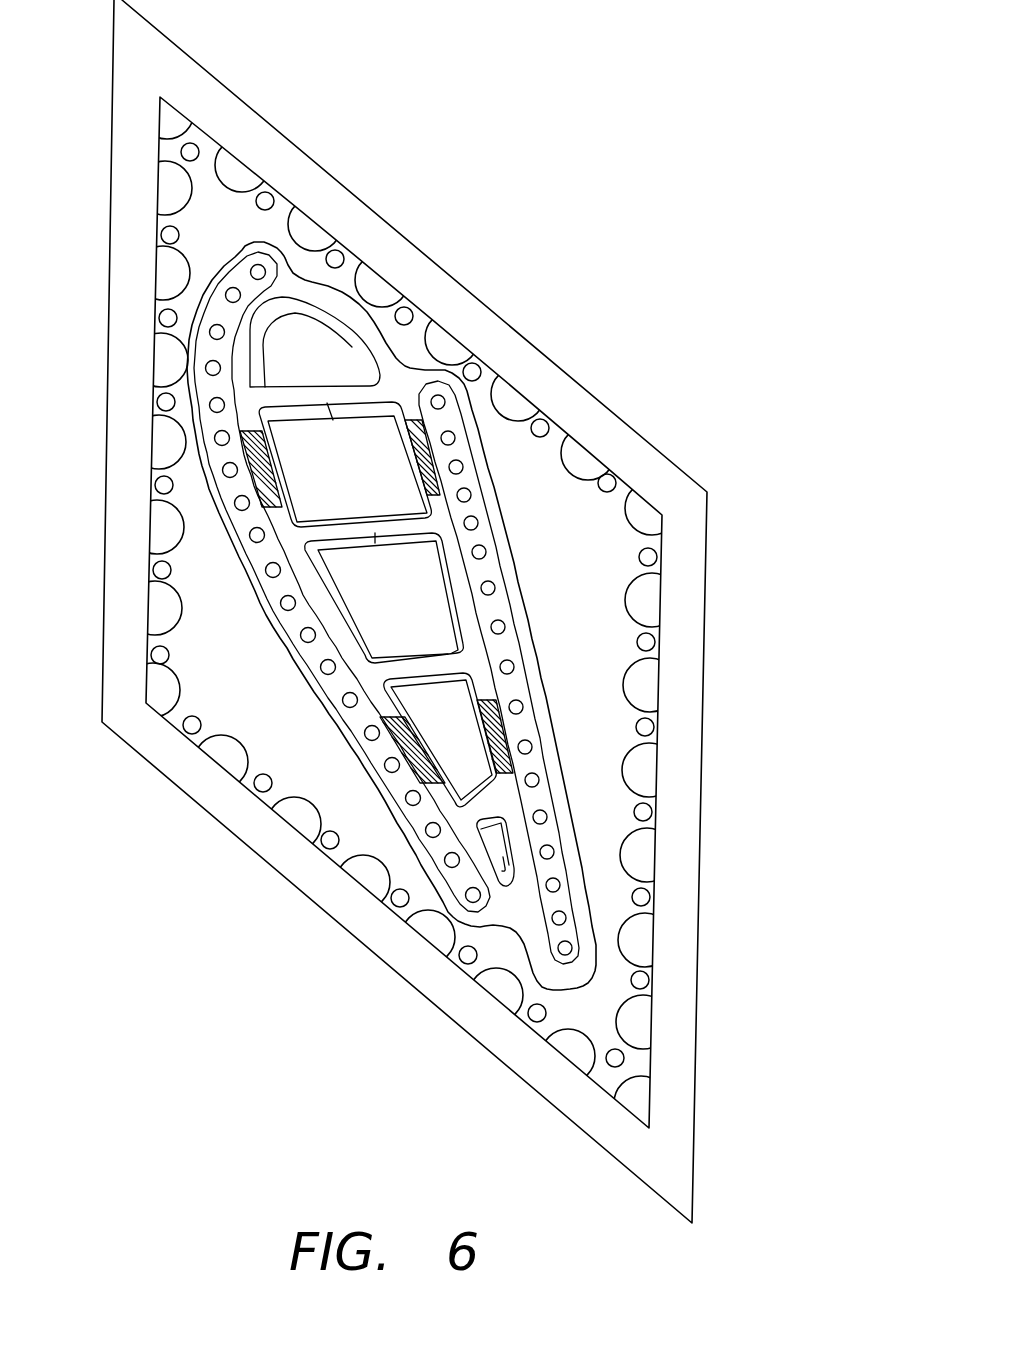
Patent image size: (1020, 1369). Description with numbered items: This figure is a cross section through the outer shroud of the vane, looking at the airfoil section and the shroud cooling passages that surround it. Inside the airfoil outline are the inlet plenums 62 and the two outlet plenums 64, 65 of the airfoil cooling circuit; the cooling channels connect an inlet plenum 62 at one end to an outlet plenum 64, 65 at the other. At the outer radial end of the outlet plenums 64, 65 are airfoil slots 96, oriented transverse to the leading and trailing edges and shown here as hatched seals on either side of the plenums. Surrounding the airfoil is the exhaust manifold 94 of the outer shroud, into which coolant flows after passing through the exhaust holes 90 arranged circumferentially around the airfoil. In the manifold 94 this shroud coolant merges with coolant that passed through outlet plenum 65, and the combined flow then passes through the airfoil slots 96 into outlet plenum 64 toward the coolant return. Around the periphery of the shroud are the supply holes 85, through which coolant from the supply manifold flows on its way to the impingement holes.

The inlet plenum 62 is at (319, 368).
The outlet plenum 64 is at (361, 488).
The outlet plenum 65 is at (455, 723).
The supply holes 85 is at (720, 598).
The exhaust holes 90 is at (440, 402).
The exhaust manifold 94 is at (263, 300).
The airfoil slots 96 is at (273, 483).